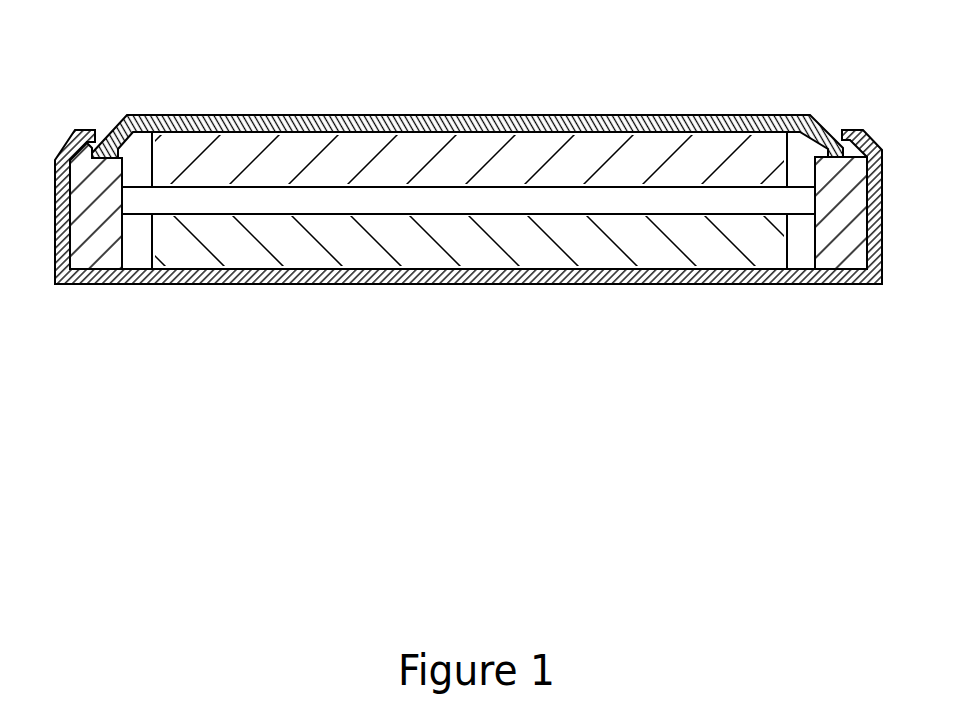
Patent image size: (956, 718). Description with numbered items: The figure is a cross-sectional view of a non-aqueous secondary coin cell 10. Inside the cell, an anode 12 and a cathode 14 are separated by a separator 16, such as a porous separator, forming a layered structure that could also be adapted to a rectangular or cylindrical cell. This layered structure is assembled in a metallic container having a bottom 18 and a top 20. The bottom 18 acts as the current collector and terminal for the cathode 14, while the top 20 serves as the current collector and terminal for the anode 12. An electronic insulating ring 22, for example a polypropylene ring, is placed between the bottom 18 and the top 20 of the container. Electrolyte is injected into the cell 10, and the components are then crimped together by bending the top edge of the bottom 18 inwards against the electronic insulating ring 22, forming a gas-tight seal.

The non-aqueous secondary cell 10 is at (158, 79).
The anode 12 is at (475, 148).
The cathode 14 is at (480, 248).
The separator 16 is at (653, 197).
The bottom 18 is at (257, 284).
The top 20 is at (731, 110).
The electronic insulating ring 22 is at (97, 255).